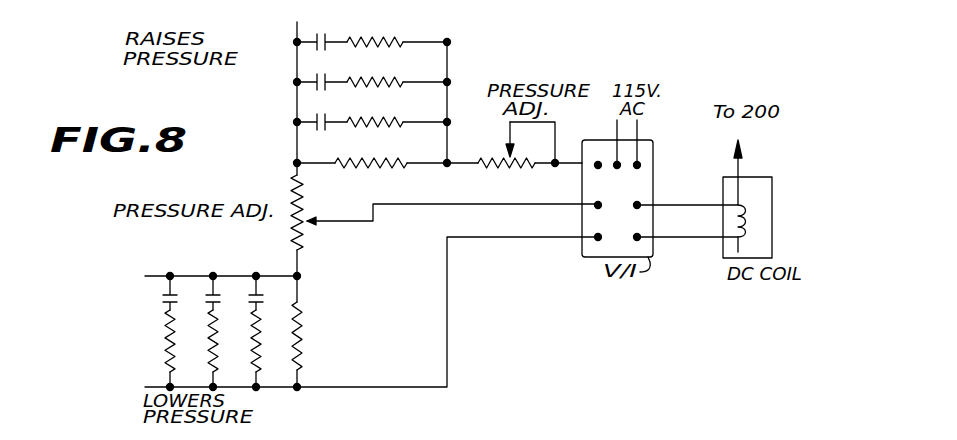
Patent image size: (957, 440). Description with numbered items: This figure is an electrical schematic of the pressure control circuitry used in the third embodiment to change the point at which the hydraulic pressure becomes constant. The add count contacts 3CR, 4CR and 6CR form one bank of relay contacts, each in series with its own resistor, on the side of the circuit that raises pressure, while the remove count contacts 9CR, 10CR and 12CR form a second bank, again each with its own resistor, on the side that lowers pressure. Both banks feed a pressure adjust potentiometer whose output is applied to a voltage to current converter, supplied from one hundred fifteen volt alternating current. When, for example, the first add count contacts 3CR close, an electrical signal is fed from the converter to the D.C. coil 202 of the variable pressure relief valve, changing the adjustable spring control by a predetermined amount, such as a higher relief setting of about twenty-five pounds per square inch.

The D.C. coil 202 is at (762, 211).
The add count contacts 3CR is at (317, 38).
The add count contacts 4CR is at (330, 80).
The add count contacts 6CR is at (330, 120).
The remove count contacts 9CR is at (166, 292).
The remove count contacts 10CR is at (208, 292).
The remove count contacts 12CR is at (260, 292).